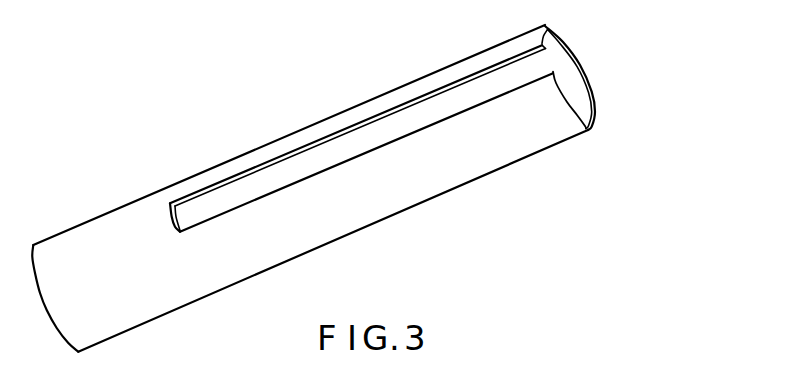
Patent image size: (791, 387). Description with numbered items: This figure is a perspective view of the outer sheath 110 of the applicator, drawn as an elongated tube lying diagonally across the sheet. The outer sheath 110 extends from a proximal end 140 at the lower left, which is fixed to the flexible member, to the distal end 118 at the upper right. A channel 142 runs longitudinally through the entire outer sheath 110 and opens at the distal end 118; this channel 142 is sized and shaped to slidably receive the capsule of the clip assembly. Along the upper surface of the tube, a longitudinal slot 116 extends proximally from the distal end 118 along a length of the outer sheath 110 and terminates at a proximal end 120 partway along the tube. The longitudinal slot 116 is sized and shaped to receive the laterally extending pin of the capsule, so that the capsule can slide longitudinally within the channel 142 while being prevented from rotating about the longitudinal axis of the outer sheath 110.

The outer sheath 110 is at (358, 196).
The longitudinal slot 116 is at (321, 150).
The distal end 118 is at (554, 132).
The proximal end 120 is at (185, 212).
The proximal end 140 is at (72, 238).
The channel 142 is at (567, 72).